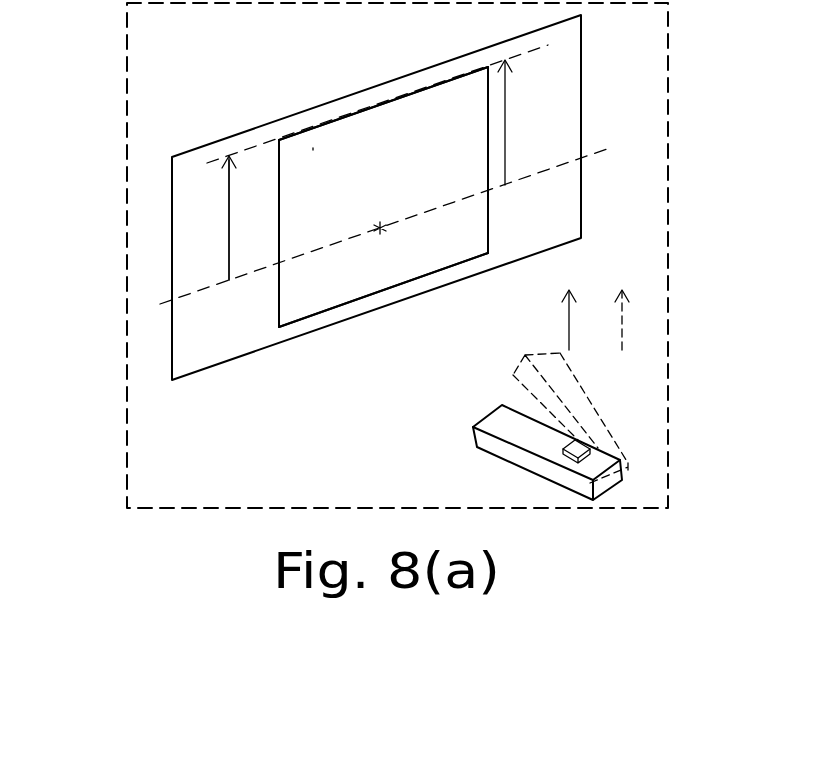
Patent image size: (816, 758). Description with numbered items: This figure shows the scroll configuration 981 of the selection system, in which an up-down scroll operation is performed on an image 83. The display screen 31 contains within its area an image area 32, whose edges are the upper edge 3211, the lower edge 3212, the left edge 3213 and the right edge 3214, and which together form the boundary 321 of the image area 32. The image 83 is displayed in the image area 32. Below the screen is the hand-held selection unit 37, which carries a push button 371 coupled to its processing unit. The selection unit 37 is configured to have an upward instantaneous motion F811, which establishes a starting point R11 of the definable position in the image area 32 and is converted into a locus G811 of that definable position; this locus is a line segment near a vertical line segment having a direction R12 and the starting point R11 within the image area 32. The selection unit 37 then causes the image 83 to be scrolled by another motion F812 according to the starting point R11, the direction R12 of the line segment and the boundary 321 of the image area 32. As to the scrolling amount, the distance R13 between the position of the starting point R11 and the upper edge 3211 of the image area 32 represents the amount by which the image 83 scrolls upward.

The scroll configuration 981 is at (127, 218).
The display screen 31 is at (248, 131).
The image area 32 is at (347, 112).
The boundary of the image area 321 is at (490, 222).
The upper edge of the image area 3211 is at (403, 93).
The lower edge of the image area 3212 is at (387, 288).
The left edge of the image area 3213 is at (279, 305).
The right edge of the image area 3214 is at (505, 122).
The image 83 is at (313, 148).
The locus G811 is at (381, 224).
The starting point R11 is at (379, 238).
The direction R12 is at (209, 218).
The distance R13 is at (253, 220).
The upward instantaneous motion F811 is at (539, 315).
The another motion F812 is at (625, 342).
The selection unit 37 is at (497, 422).
The push button 371 is at (568, 453).